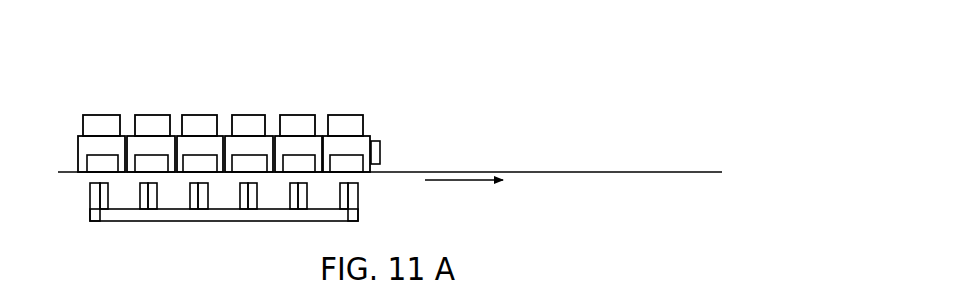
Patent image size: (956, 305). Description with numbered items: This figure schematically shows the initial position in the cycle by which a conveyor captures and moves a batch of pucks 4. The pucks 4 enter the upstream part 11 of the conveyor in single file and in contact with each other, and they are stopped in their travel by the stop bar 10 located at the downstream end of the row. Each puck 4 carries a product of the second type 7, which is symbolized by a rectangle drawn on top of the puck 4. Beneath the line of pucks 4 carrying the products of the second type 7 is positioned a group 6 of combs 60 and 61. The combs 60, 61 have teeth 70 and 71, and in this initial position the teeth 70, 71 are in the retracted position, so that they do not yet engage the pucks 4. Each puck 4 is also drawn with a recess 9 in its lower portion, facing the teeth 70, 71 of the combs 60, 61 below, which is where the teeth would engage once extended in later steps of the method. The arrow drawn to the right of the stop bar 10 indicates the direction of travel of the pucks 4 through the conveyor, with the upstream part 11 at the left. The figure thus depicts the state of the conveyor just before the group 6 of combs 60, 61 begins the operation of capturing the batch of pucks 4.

The upstream part 11 is at (120, 65).
The products of the second type 7 is at (100, 123).
The pucks 4 is at (80, 147).
The recess 9 is at (102, 162).
The stop bar 10 is at (378, 158).
The group of combs 6 is at (200, 229).
The teeth 70 is at (92, 195).
The teeth 71 is at (107, 197).
The comb 60 is at (165, 213).
The comb 61 is at (210, 206).